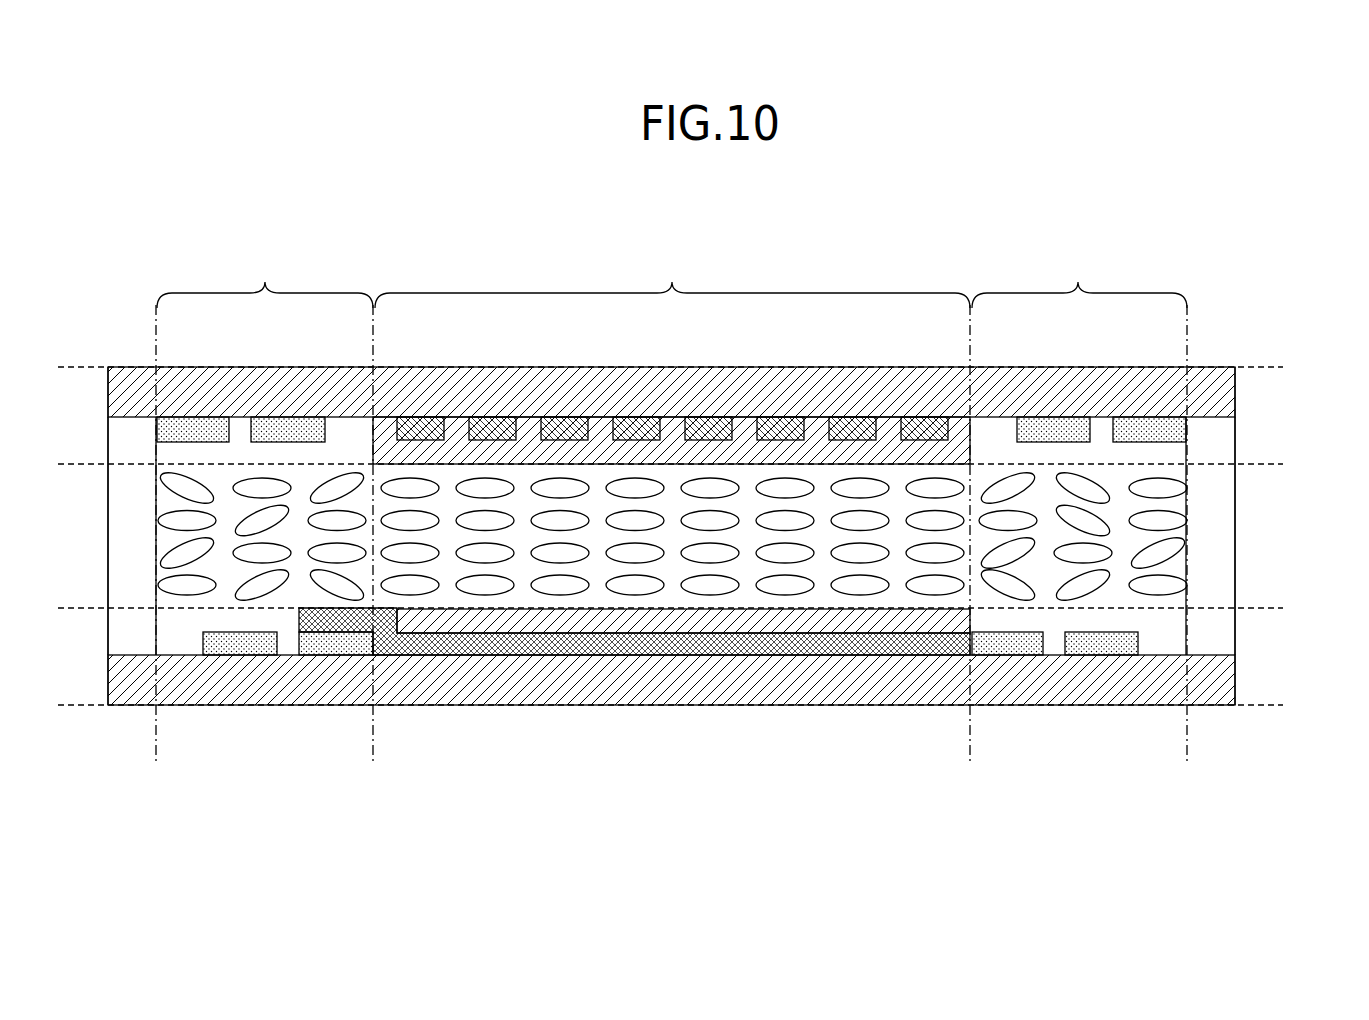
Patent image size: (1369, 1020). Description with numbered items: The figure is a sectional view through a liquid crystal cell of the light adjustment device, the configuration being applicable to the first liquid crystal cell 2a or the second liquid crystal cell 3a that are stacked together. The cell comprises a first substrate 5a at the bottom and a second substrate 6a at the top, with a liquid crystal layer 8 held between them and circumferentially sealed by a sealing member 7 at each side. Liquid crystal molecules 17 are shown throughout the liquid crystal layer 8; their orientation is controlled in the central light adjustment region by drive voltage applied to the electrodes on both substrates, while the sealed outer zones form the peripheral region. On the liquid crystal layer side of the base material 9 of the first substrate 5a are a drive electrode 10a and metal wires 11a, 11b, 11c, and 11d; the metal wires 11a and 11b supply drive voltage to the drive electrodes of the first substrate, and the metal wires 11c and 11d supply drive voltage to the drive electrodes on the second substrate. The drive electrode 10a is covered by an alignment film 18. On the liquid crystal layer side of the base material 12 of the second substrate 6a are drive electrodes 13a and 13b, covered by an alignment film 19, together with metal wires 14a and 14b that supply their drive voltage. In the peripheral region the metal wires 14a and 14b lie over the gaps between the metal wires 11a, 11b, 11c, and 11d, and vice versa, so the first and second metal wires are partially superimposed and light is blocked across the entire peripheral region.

The first liquid crystal cell 2a is at (699, 473).
The second liquid crystal cell 3a is at (699, 486).
The first substrate 5a is at (1283, 608).
The second substrate 6a is at (1283, 367).
The sealing member 7 is at (130, 570).
The liquid crystal layer 8 is at (673, 536).
The base material 9 is at (132, 676).
The drive electrode 10a is at (910, 648).
The metal wire 11a is at (235, 646).
The metal wire 11b is at (330, 646).
The metal wire 11c is at (1010, 646).
The metal wire 11d is at (1105, 646).
The base material 12 is at (132, 388).
The drive electrode 13a is at (858, 432).
The drive electrode 13b is at (928, 432).
The metal wire 14a is at (195, 430).
The metal wire 14b is at (1055, 430).
The liquid crystal molecules 17 is at (172, 482).
The alignment film 18 is at (643, 626).
The alignment film 19 is at (672, 448).